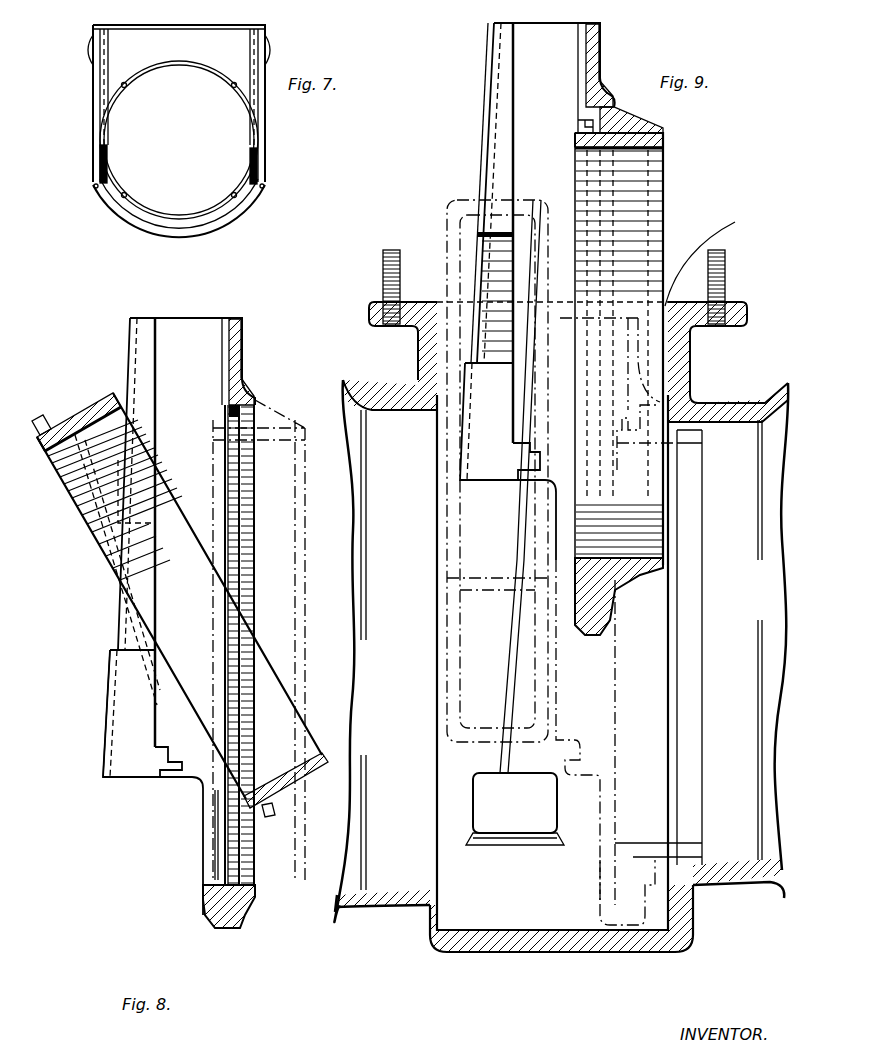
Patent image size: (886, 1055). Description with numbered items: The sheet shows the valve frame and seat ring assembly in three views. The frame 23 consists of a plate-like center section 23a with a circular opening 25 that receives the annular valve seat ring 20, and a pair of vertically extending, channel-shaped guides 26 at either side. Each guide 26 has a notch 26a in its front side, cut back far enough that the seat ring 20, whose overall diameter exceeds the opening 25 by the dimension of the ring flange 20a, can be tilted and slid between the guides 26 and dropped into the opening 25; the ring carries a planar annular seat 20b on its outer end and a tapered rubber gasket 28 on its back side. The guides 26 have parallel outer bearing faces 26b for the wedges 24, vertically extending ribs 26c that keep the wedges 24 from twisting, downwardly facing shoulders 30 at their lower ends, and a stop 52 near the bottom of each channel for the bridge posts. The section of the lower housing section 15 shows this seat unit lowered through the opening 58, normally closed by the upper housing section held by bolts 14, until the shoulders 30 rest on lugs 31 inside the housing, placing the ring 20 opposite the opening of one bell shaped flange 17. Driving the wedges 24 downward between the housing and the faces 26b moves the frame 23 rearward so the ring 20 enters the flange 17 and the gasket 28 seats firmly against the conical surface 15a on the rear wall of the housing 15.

In FIG. 9, the bolts 14 is at (726, 272).
In FIG. 9, the lower housing section 15 is at (510, 942).
In FIG. 9, the conical or beveled surface 15a is at (696, 895).
In FIG. 9, the bell shaped flanges 17 is at (352, 905).
In FIG. 8, the valve seat ring 20 is at (88, 406).
In FIG. 9, the valve seat ring 20 is at (664, 192).
In FIG. 8, the ring flange 20a is at (38, 418).
In FIG. 9, the ring flange 20a is at (588, 120).
In FIG. 8, the annular seat 20b is at (40, 452).
In FIG. 9, the annular seat 20b is at (575, 140).
In FIG. 7, the frame 23 is at (86, 99).
In FIG. 8, the frame 23 is at (213, 318).
In FIG. 9, the frame 23 is at (612, 34).
In FIG. 7, the plate-like center section 23a is at (194, 30).
In FIG. 8, the plate-like center section 23a is at (240, 350).
In FIG. 9, the plate-like center section 23a is at (600, 53).
In FIG. 9, the wedges 24 is at (447, 210).
In FIG. 7, the circular opening 25 is at (182, 214).
In FIG. 8, the circular opening 25 is at (232, 856).
In FIG. 9, the circular opening 25 is at (576, 540).
In FIG. 7, the guides 26 is at (93, 71).
In FIG. 8, the guides 26 is at (172, 318).
In FIG. 9, the guides 26 is at (530, 42).
In FIG. 7, the notch 26a is at (106, 145).
In FIG. 8, the notch 26a is at (135, 648).
In FIG. 9, the notch 26a is at (490, 352).
In FIG. 7, the bearing face 26b is at (98, 110).
In FIG. 8, the bearing face 26b is at (126, 345).
In FIG. 9, the bearing face 26b is at (485, 138).
In FIG. 7, the vertically extending ribs 26c is at (110, 40).
In FIG. 8, the vertically extending ribs 26c is at (107, 692).
In FIG. 9, the vertically extending ribs 26c is at (487, 96).
In FIG. 9, the gasket 28 is at (640, 120).
In FIG. 7, the shoulders 30 is at (94, 190).
In FIG. 8, the shoulders 30 is at (122, 780).
In FIG. 9, the shoulders 30 is at (476, 481).
In FIG. 9, the lugs 31 is at (516, 774).
In FIG. 8, the stop 52 is at (168, 747).
In FIG. 9, the stop 52 is at (513, 444).
In FIG. 9, the opening 58 is at (706, 259).